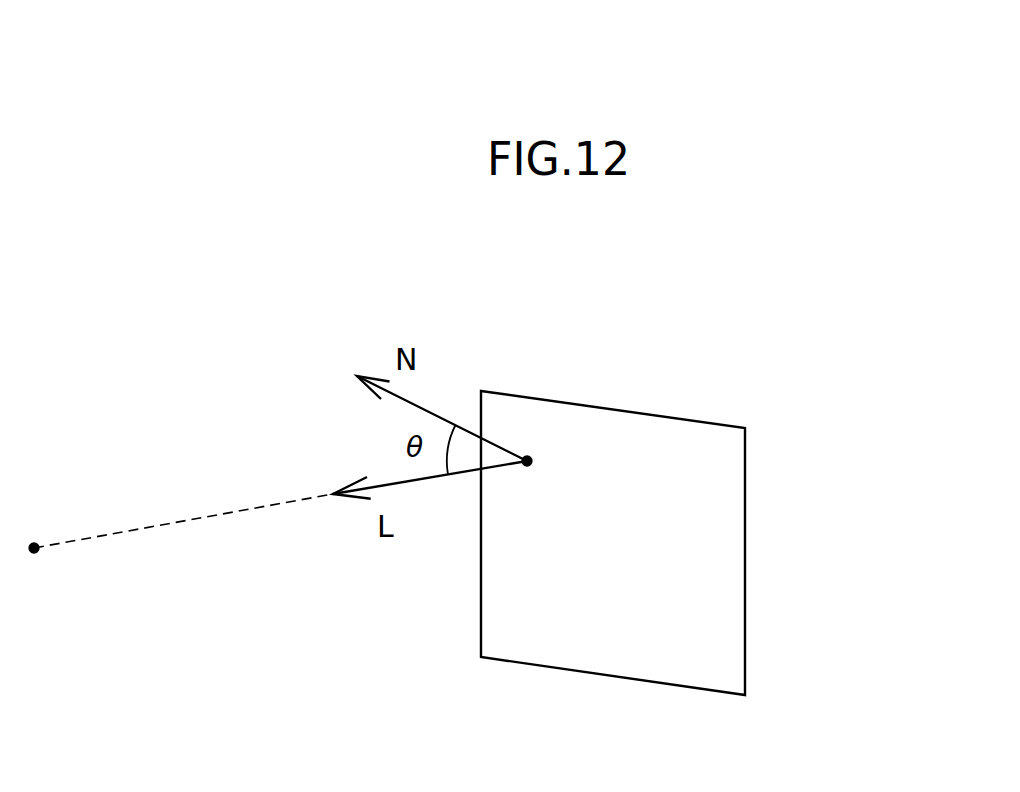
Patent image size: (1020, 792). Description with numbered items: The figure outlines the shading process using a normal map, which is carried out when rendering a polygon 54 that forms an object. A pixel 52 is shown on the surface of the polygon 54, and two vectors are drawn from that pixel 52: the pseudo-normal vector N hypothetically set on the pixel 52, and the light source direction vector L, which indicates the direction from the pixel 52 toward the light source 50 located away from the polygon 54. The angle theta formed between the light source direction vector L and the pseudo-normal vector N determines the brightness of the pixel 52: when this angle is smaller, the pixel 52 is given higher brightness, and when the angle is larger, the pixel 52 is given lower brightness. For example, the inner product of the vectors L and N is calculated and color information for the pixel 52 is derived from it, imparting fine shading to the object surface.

The light source 50 is at (36, 551).
The pixel 52 is at (527, 461).
The polygon 54 is at (745, 543).